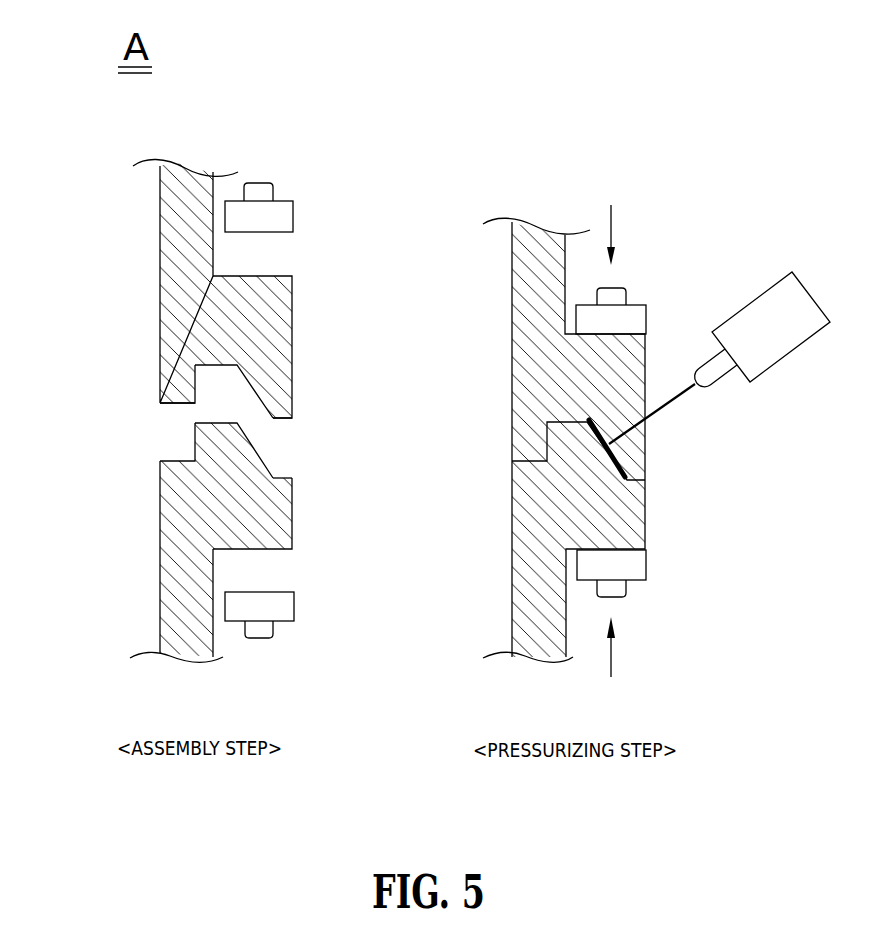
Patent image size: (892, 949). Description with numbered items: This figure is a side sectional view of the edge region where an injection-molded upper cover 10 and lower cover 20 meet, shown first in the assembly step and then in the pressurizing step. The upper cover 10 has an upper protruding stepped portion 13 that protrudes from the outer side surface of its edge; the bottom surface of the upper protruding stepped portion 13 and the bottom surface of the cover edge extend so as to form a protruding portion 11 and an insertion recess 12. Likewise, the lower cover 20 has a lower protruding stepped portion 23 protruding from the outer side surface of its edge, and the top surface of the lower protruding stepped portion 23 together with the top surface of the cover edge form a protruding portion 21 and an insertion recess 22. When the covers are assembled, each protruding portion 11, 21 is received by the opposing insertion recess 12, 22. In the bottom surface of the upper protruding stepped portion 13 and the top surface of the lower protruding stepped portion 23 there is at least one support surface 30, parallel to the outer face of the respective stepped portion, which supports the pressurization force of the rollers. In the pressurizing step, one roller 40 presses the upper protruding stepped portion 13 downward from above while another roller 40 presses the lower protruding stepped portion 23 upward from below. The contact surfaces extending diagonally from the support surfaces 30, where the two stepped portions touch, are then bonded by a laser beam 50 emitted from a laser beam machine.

The upper cover 10 is at (201, 288).
The protruding portion 11 is at (167, 395).
The insertion recess 12 is at (235, 385).
The upper protruding stepped portion 13 is at (293, 288).
The lower cover 20 is at (204, 542).
The protruding portion 21 is at (207, 432).
The insertion recess 22 is at (180, 458).
The lower protruding stepped portion 23 is at (293, 510).
The support surface 30 is at (220, 423).
The roller 40 is at (282, 212).
The laser beam 50 is at (671, 403).